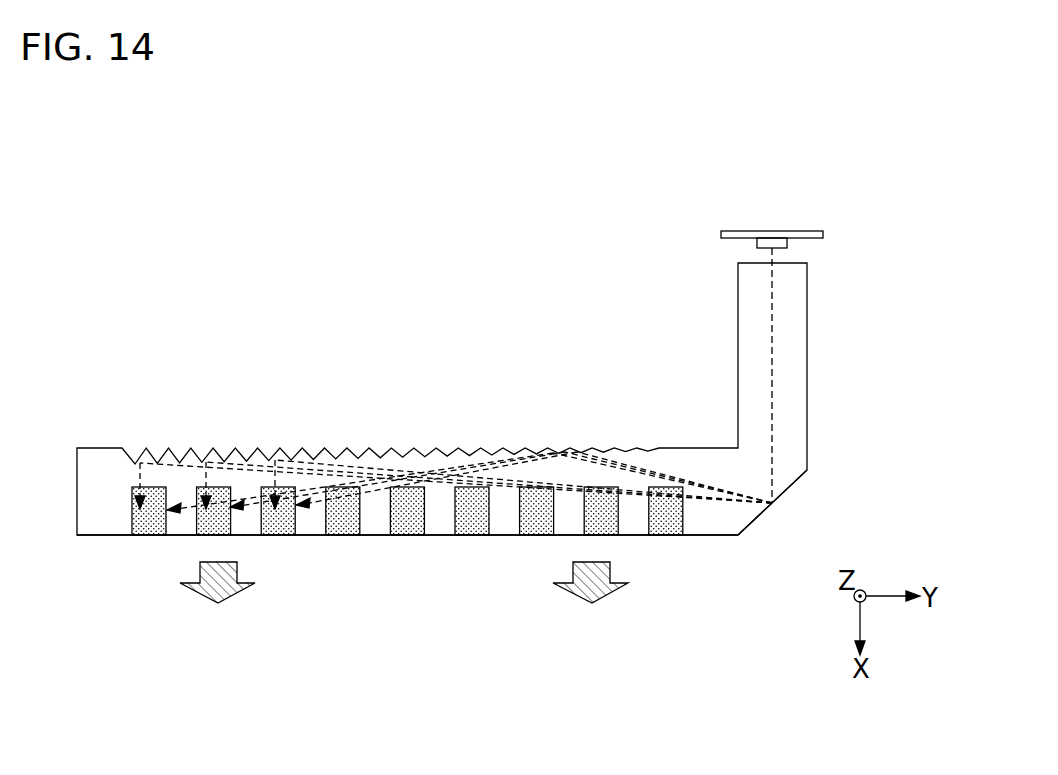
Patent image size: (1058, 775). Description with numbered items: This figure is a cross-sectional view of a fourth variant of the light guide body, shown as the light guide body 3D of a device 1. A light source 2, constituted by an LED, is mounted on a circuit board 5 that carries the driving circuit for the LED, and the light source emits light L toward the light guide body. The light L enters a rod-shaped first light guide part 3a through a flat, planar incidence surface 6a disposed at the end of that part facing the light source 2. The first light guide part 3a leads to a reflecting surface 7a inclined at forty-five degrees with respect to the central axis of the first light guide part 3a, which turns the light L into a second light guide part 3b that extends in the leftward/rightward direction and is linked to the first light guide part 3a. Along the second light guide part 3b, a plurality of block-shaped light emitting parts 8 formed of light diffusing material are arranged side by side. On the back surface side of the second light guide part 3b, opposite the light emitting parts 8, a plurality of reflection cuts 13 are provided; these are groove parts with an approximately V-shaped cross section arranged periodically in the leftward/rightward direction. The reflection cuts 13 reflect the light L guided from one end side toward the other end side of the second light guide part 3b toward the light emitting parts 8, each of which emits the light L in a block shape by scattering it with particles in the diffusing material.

The input device 1 is at (127, 205).
The light source (LED) 2 is at (772, 242).
The circuit board 5 is at (822, 233).
The incidence surface 6a is at (787, 264).
The first light guide part 3a is at (808, 355).
The reflecting surface 7a is at (774, 505).
The light guide body 3D is at (403, 413).
The reflection cut 13 is at (452, 452).
The second light guide part 3b is at (438, 537).
The light emitting part 8 is at (147, 523).
The light L is at (773, 403).